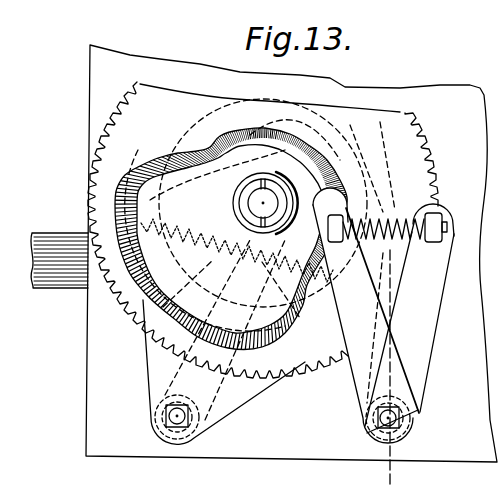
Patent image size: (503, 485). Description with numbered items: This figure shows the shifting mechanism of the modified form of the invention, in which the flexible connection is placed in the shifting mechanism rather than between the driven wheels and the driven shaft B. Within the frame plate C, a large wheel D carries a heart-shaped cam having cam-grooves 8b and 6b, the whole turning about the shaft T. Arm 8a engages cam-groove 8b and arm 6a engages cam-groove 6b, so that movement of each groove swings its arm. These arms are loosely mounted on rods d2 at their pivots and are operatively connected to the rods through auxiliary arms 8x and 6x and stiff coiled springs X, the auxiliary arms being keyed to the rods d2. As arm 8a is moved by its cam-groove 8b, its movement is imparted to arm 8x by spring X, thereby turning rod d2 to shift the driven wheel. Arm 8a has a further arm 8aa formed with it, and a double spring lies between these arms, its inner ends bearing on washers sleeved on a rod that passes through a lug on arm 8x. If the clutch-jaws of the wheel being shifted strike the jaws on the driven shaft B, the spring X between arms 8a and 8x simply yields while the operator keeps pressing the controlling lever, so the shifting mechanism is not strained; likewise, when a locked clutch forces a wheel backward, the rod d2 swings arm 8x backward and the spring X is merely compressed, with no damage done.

The frame plate C is at (88, 84).
The driven shaft B is at (72, 274).
The gear wheel D is at (263, 230).
The cam-groove 6b is at (206, 148).
The shaft T is at (260, 201).
The cam-groove 8b is at (357, 146).
The stiff coiled spring x is at (294, 241).
The arm 8a is at (147, 349).
The auxiliary arm 8x is at (157, 387).
The arm 8aa is at (243, 379).
The arm 6a is at (358, 393).
The auxiliary arm 6x is at (438, 338).
The rod d2 is at (187, 420).